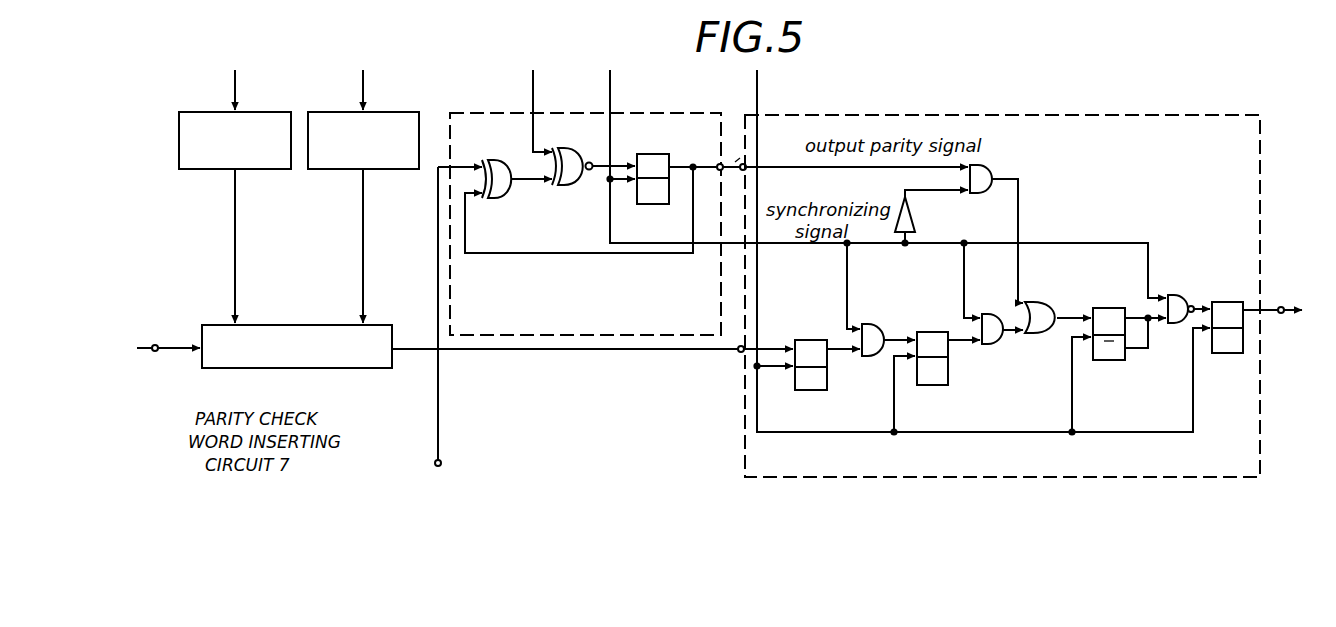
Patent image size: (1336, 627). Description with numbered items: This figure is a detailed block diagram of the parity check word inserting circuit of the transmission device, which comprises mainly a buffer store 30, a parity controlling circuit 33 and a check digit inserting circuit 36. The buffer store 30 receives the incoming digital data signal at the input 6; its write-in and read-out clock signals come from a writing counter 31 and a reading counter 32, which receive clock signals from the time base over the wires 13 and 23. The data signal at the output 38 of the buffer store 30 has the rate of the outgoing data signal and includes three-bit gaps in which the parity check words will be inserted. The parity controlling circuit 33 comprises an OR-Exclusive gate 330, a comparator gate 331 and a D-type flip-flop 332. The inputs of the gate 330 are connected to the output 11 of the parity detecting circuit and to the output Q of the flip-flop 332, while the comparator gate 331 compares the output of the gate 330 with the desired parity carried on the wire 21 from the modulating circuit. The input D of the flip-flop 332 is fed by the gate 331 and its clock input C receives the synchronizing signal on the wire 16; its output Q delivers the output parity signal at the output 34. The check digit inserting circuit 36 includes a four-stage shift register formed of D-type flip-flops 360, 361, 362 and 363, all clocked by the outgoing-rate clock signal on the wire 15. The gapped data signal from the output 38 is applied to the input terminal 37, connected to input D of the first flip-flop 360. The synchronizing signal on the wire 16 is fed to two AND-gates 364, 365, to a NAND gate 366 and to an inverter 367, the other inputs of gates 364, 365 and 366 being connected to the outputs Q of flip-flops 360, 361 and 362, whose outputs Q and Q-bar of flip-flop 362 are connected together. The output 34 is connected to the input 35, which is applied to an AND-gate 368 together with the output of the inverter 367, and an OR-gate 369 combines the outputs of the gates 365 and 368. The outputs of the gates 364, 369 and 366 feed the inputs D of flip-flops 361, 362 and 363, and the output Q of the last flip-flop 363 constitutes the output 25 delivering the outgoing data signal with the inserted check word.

The input 6 is at (155, 345).
The output of the parity detecting circuit 11 is at (441, 464).
The wire 13 is at (235, 80).
The wire 15 is at (757, 80).
The wire 16 is at (610, 80).
The output wire of the modulating circuit 21 is at (533, 80).
The wire 23 is at (363, 80).
The output terminal 25 is at (1281, 307).
The buffer store 30 is at (309, 369).
The writing counter 31 is at (213, 170).
The reading counter 32 is at (343, 170).
The parity controlling circuit 33 is at (618, 336).
The output of the parity controlling circuit 34 is at (718, 164).
The input of the check digit inserting circuit 35 is at (752, 164).
The check digit inserting circuit 36 is at (745, 435).
The input terminal 37 is at (738, 353).
The output of the buffer store 38 is at (396, 347).
The OR-Exclusive gate 330 is at (503, 170).
The comparator gate 331 is at (573, 158).
The D-type flip-flop 332 is at (657, 204).
The D-type flip-flop 360 is at (818, 390).
The D-type flip-flop 361 is at (938, 385).
The D-type flip-flop 362 is at (1114, 360).
The D-type flip-flop 363 is at (1232, 353).
The AND-gate 364 is at (873, 323).
The AND-gate 365 is at (993, 312).
The NAND gate 366 is at (1183, 283).
The inverter 367 is at (912, 220).
The AND-gate 368 is at (994, 176).
The OR-gate 369 is at (1043, 300).